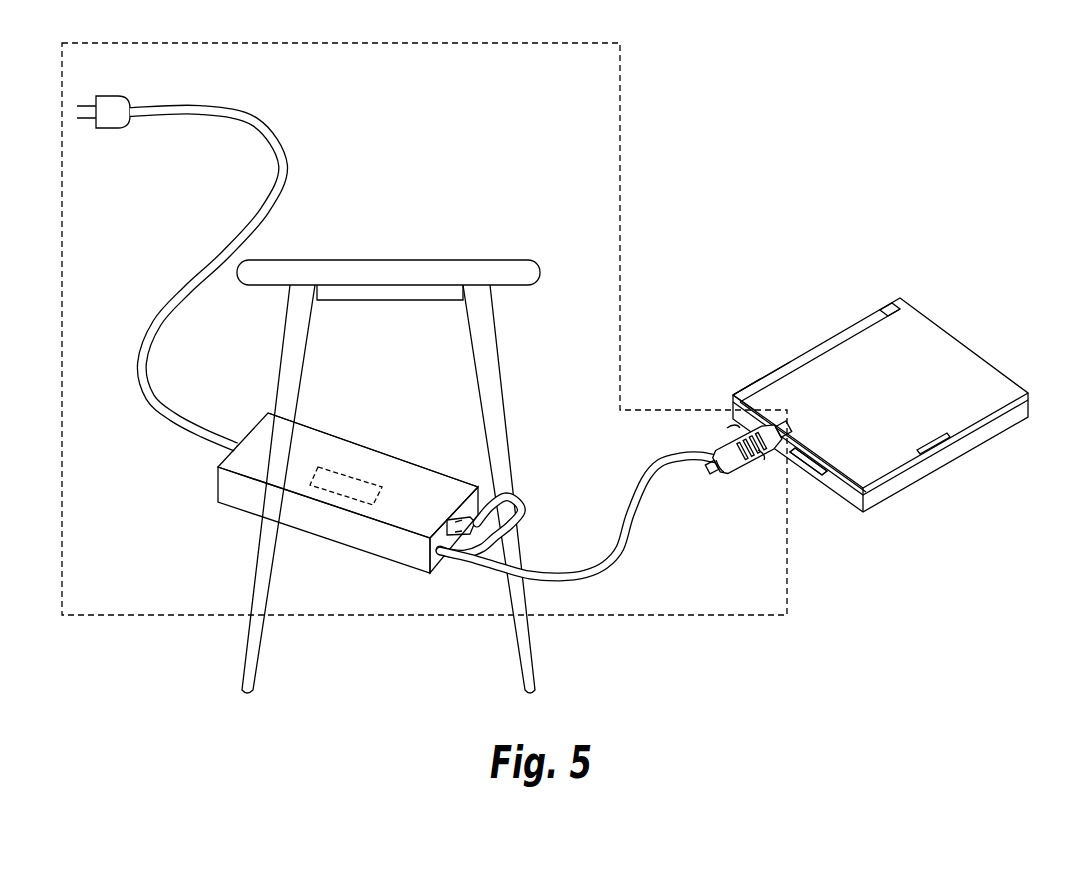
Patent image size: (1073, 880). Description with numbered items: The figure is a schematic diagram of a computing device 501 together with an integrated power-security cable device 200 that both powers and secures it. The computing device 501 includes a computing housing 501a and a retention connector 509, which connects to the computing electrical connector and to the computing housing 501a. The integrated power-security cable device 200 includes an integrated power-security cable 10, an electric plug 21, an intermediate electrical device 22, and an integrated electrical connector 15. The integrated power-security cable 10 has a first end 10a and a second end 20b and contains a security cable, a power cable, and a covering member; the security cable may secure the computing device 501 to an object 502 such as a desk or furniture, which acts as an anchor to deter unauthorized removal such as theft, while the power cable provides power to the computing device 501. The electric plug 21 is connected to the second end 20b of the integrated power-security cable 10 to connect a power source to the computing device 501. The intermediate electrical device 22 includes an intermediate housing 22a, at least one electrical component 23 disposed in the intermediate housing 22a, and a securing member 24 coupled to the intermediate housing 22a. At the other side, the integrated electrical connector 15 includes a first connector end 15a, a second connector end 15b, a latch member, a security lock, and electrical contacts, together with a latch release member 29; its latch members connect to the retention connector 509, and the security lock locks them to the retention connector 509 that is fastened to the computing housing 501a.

The integrated power-security cable device 200 is at (620, 72).
The second end of the integrated power-security cable 20b is at (136, 99).
The electric plug 21 is at (112, 122).
The object 502 is at (371, 270).
The intermediate electrical device 22 is at (278, 438).
The intermediate housing 22a is at (380, 440).
The electrical component 23 is at (330, 485).
The securing member 24 is at (451, 558).
The integrated power-security cable 10 is at (585, 568).
The integrated electrical connector 15 is at (737, 474).
The first connector end 15a is at (710, 450).
The second connector end 15b is at (783, 427).
The first end of the integrated power-security cable 10a is at (722, 467).
The latch release member 29 is at (733, 428).
The computing device 501 is at (900, 407).
The computing housing 501a is at (745, 393).
The retention connector 509 is at (773, 423).